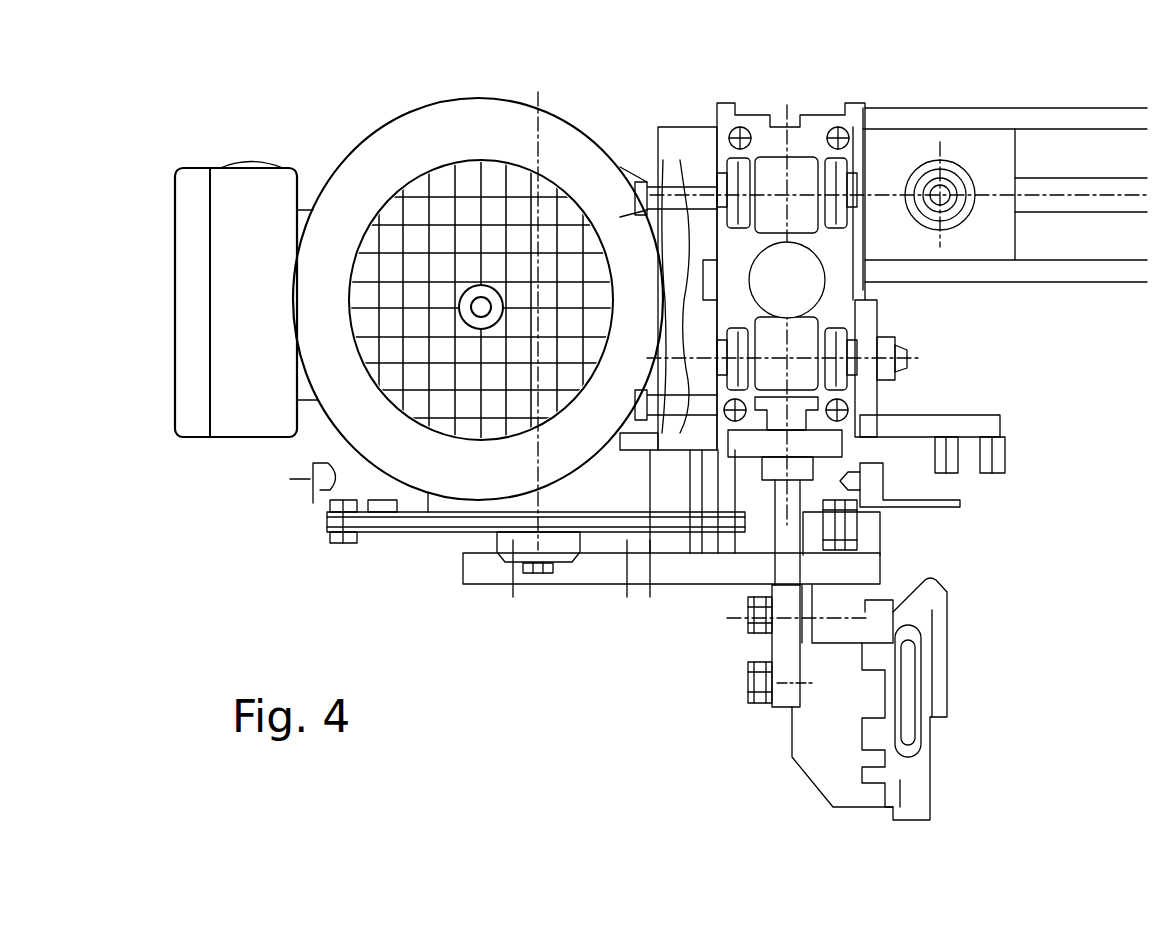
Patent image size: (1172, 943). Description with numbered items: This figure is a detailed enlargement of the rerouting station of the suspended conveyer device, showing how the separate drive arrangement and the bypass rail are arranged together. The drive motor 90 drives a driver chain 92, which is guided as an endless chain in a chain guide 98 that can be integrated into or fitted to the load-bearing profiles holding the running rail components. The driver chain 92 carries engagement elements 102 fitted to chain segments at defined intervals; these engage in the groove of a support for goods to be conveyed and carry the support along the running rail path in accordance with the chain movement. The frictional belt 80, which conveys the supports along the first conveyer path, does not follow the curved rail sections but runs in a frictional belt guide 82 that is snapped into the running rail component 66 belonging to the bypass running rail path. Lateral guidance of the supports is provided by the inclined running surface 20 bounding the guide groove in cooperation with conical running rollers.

The running surface 20 is at (935, 573).
The running rail component 66 is at (933, 748).
The frictional belt 80 is at (947, 662).
The frictional belt guide 82 is at (943, 618).
The drive motor 90 is at (373, 155).
The driver chain 92 is at (880, 520).
The chain guide 98 is at (815, 536).
The engagement element 102 is at (950, 494).